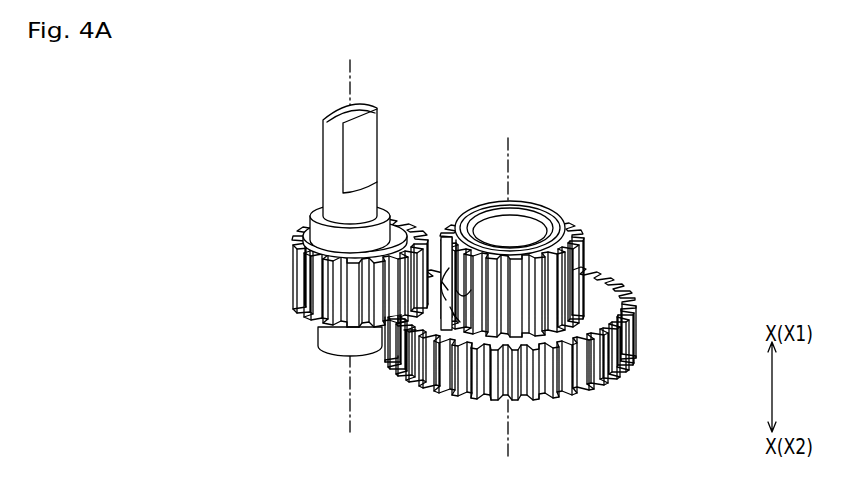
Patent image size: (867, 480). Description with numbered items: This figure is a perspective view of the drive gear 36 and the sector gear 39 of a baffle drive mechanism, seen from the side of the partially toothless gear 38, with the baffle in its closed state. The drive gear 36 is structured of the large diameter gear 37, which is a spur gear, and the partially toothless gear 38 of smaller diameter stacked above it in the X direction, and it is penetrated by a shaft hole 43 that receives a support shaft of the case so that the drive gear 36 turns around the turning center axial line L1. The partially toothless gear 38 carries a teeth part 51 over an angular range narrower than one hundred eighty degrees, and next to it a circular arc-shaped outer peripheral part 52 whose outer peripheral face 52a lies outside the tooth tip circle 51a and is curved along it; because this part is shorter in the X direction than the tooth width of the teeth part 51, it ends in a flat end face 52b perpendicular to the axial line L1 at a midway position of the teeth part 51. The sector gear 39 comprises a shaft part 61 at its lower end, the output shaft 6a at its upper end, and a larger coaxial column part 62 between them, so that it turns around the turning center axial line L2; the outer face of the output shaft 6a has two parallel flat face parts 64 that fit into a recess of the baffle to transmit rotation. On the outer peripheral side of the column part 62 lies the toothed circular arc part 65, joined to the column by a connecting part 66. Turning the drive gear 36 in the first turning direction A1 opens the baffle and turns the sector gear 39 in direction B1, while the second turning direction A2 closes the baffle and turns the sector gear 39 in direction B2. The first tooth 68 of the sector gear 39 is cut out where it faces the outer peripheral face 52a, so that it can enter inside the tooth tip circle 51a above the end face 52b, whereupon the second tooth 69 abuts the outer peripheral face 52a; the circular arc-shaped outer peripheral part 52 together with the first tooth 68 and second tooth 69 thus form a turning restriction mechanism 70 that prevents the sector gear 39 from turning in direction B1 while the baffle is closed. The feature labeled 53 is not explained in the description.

The output shaft 6a is at (336, 155).
The drive gear 36 is at (442, 282).
The large diameter gear 37 is at (627, 303).
The partially toothless gear 38 is at (524, 301).
The sector gear 39 is at (308, 235).
The shaft hole 43 is at (540, 225).
The teeth part 51 is at (444, 282).
The tooth tip circle 51a is at (528, 370).
The circular arc-shaped outer peripheral part 52 is at (433, 320).
The outer peripheral face 52a is at (453, 314).
The end face 52b is at (442, 282).
The protrusion 53 is at (466, 254).
The shaft part 61 is at (332, 343).
The column part 62 is at (312, 232).
The flat face parts 64 is at (332, 108).
The circular arc part 65 is at (327, 258).
The connecting part 66 is at (389, 232).
The first tooth 68 is at (442, 237).
The second tooth 69 is at (410, 338).
The turning restriction mechanism 70 is at (450, 307).
The turning center axial line L1 is at (510, 152).
The turning center axial line L2 is at (365, 66).
The first turning direction A1 is at (495, 432).
The second turning direction A2 is at (538, 434).
The first turning direction B1 is at (396, 388).
The second turning direction B2 is at (337, 400).